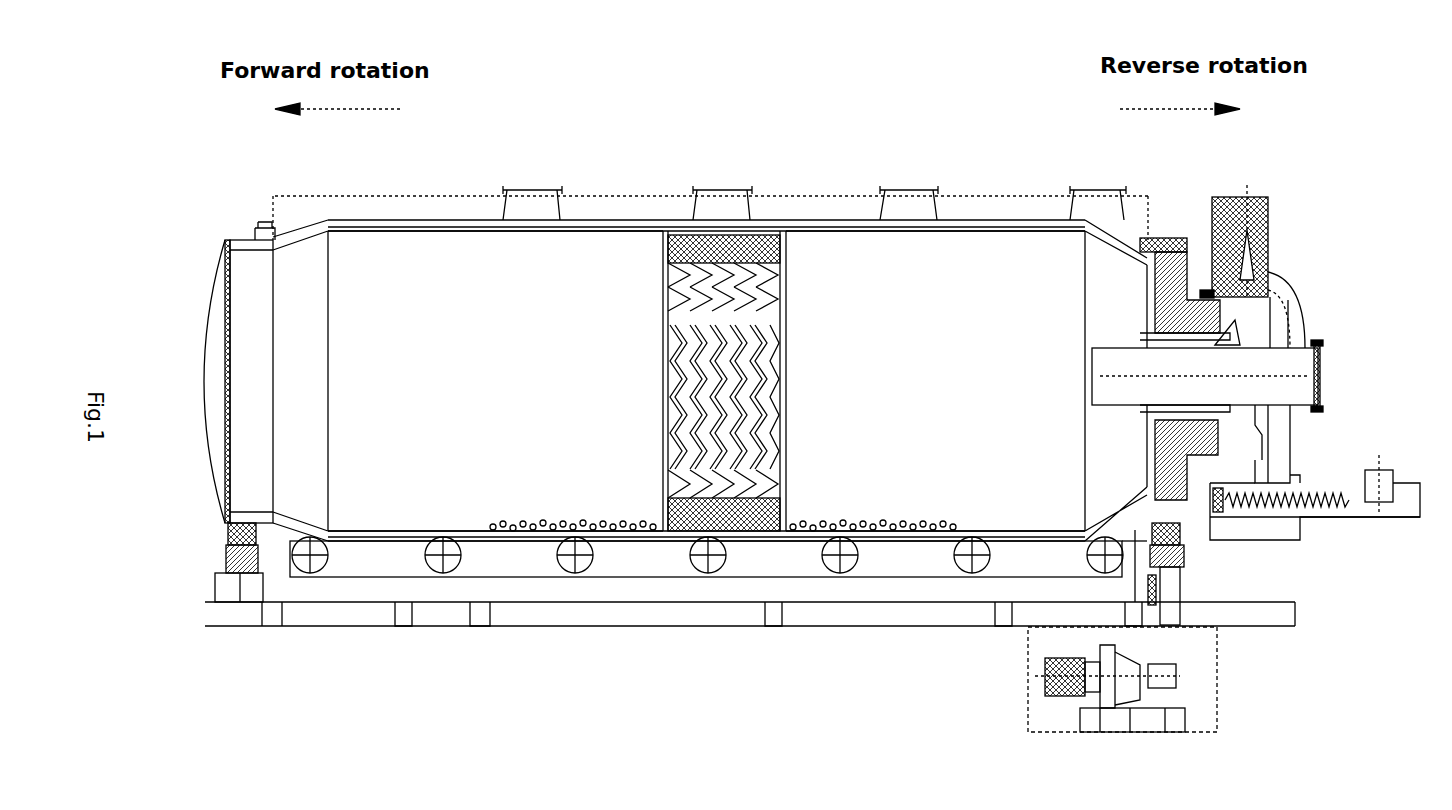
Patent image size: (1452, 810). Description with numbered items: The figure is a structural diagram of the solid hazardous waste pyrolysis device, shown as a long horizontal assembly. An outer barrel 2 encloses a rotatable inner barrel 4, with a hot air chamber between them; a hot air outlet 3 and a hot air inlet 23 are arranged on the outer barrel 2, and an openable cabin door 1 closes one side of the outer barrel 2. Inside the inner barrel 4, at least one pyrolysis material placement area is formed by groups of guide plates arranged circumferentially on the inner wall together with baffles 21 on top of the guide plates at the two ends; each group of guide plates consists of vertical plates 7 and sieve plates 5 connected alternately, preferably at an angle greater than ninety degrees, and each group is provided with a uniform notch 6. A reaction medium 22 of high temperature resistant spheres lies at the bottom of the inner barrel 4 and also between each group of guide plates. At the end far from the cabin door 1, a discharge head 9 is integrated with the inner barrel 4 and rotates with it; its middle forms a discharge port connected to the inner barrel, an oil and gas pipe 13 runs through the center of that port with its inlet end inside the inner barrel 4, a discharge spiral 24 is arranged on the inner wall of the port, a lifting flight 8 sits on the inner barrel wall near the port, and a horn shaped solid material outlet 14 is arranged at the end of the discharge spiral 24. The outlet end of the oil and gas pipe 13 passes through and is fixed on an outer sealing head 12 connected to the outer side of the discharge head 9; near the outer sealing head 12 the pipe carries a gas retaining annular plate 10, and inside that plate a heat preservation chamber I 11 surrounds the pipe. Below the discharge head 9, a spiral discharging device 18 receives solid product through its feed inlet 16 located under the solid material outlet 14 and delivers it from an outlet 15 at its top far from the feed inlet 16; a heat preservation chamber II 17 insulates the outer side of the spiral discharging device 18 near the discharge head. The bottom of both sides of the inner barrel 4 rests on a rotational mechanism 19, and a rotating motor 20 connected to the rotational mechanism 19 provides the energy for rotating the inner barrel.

The cabin door 1 is at (210, 368).
The outer barrel 2 is at (415, 196).
The hot air outlet 3 is at (522, 205).
The inner barrel 4 is at (555, 275).
The sieve plate I 5 is at (700, 240).
The notch 6 is at (738, 305).
The vertical plate 7 is at (775, 320).
The lifting flight 8 is at (1095, 215).
The discharge head 9 is at (1185, 235).
The gas retaining annular plate 10 is at (1255, 257).
The heat preservation chamber I 11 is at (1272, 350).
The outer sealing head 12 is at (1300, 330).
The oil and gas pipe 13 is at (1322, 358).
The solid material outlet 14 is at (1290, 470).
The outlet of the spiral discharging device 15 is at (1383, 488).
The feed inlet 16 is at (1248, 502).
The heat preservation chamber II 17 is at (1295, 530).
The spiral discharging device 18 is at (1350, 510).
The rotational mechanism 19 is at (235, 580).
The rotating motor 20 is at (1170, 682).
The baffle 21 is at (785, 417).
The reaction medium 22 is at (575, 557).
The hot air inlet 23 is at (443, 557).
The discharge spiral 24 is at (1250, 390).